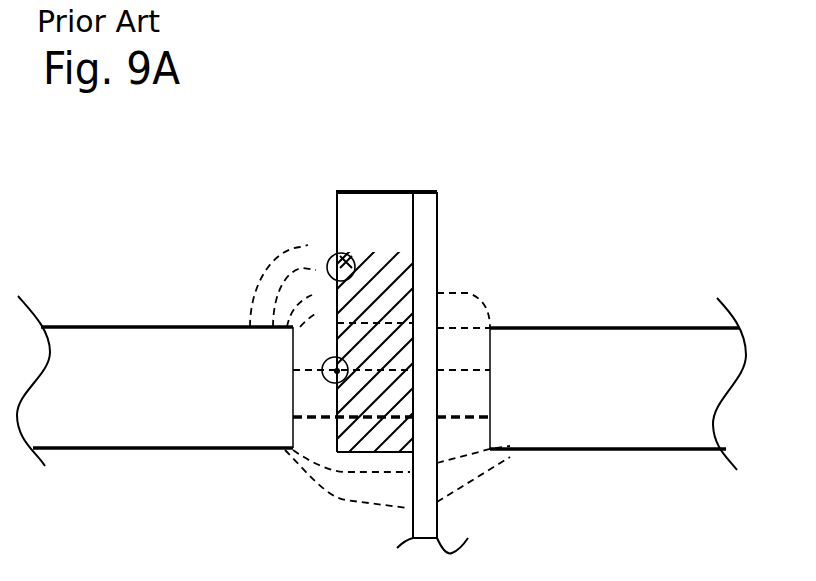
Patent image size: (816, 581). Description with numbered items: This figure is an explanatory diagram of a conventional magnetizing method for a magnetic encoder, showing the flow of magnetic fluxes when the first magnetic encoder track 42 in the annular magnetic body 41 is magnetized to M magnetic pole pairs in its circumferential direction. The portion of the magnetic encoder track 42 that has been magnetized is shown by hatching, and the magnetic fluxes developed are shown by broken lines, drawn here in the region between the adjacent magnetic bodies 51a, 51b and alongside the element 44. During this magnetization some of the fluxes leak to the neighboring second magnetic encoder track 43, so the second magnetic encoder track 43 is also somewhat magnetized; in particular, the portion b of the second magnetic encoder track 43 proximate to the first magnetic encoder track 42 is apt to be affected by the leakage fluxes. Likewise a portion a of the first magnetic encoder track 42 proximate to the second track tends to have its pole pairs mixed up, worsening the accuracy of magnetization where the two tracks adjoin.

The annular magnetic body 41 is at (462, 205).
The first magnetic encoder track 42 is at (354, 425).
The second magnetic encoder track 43 is at (372, 215).
The magnetic sensor element 44 is at (437, 272).
The first magnetic body 51a is at (168, 332).
The second magnetic body 51b is at (607, 348).
The portion of the first magnetic encoder track a is at (323, 381).
The portion of the second magnetic encoder track b is at (329, 262).